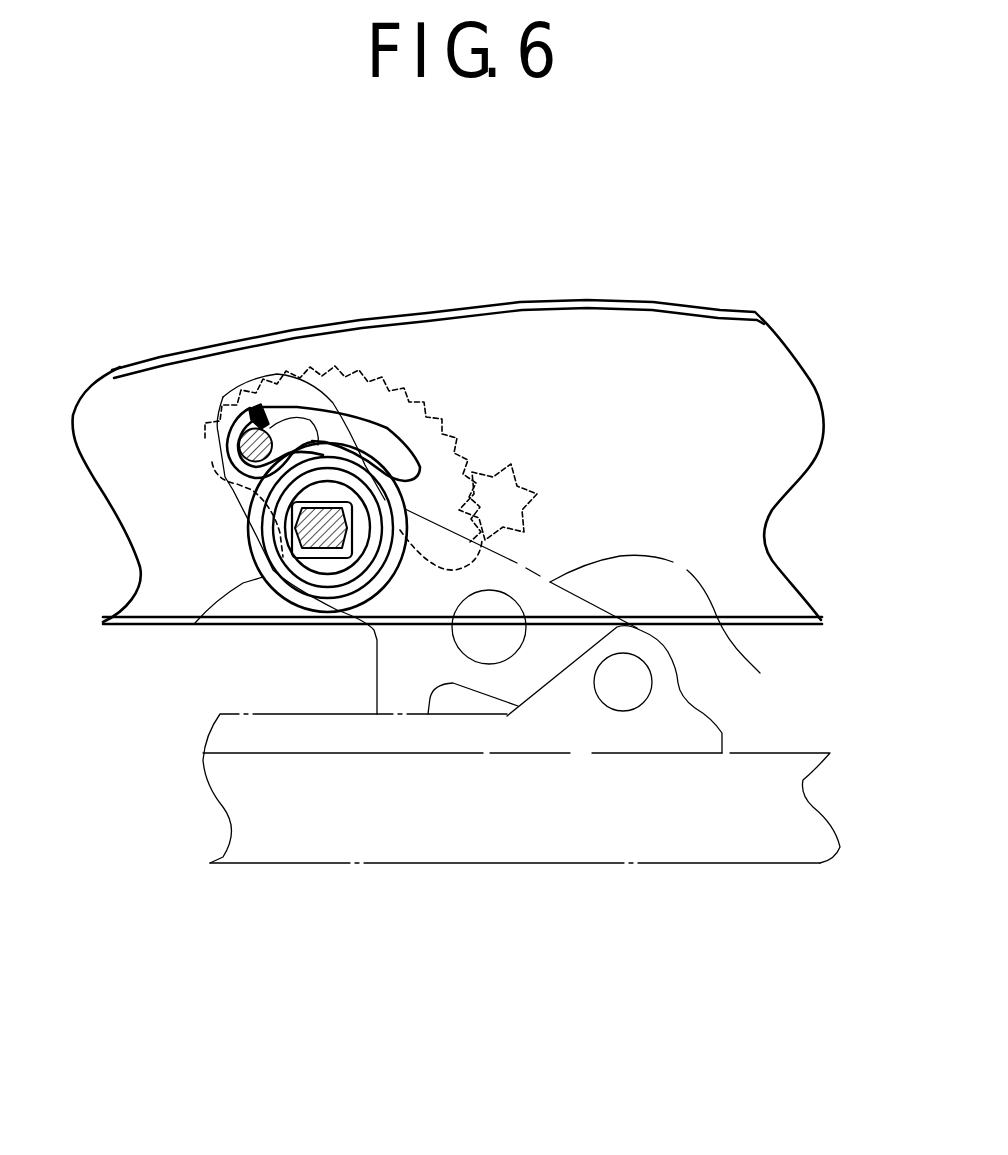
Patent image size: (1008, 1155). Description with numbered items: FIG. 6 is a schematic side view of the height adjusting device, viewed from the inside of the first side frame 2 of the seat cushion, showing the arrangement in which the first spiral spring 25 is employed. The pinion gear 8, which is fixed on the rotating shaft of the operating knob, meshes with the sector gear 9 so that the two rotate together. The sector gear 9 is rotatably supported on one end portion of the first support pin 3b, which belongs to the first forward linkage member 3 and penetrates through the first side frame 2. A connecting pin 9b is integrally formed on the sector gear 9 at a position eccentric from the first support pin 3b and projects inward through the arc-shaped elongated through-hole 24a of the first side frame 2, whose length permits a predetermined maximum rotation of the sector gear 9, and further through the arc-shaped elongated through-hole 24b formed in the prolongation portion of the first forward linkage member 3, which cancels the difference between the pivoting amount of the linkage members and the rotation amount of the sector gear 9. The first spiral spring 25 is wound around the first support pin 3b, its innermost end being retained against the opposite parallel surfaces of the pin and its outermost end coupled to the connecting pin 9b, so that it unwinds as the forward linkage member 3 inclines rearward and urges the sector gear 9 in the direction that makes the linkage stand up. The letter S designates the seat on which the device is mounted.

The plate 2 is at (725, 317).
The bracket 3 is at (762, 674).
The shaft 3b is at (317, 507).
The gear 8 is at (552, 484).
The spring 9 is at (452, 436).
The spring hook end 9b is at (343, 503).
The lever arm 24a is at (420, 407).
The lever pin 24b is at (352, 405).
The spring bracket 25 is at (207, 603).
The seat S is at (620, 863).